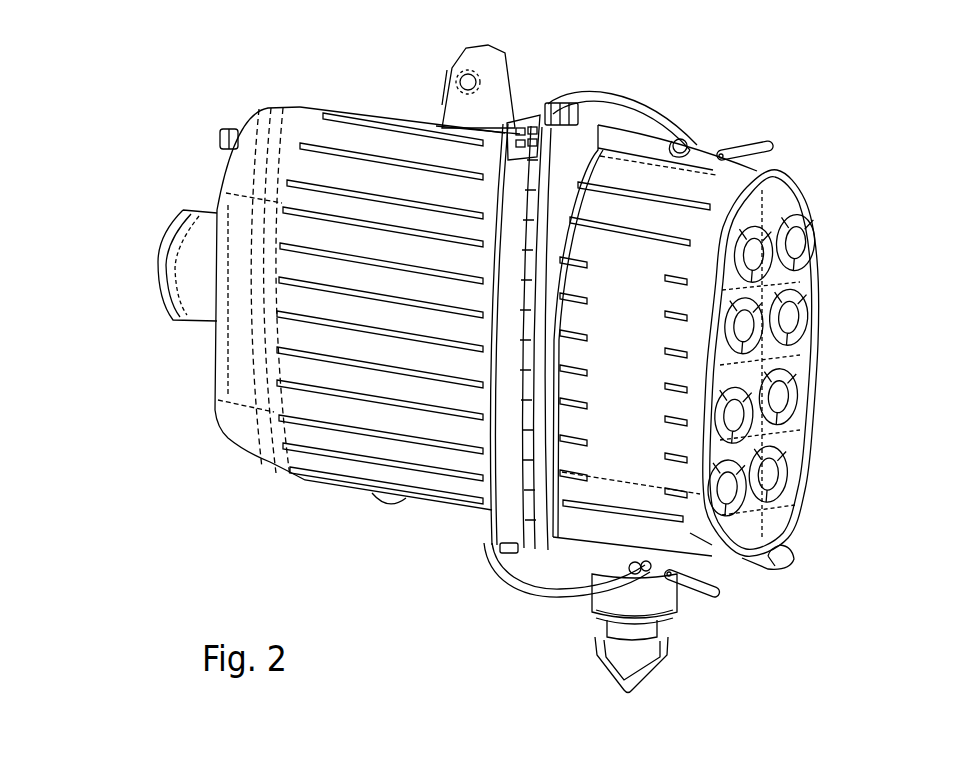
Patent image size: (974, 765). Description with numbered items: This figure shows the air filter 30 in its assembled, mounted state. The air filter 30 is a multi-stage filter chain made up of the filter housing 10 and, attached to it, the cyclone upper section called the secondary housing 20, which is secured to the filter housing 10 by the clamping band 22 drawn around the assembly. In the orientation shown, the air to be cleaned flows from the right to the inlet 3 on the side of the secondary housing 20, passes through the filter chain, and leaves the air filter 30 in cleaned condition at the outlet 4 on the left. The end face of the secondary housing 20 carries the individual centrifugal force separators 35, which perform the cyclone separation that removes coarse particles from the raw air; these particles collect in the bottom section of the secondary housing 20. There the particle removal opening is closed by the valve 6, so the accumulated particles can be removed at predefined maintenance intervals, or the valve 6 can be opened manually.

The air filter 30 is at (130, 64).
The filter housing 10 is at (353, 143).
The outlet 4 is at (162, 248).
The clamping band 22 is at (625, 93).
The secondary housing 20 is at (680, 197).
The inlet 3 is at (858, 195).
The centrifugal force separators 35 is at (787, 311).
The valve 6 is at (642, 623).